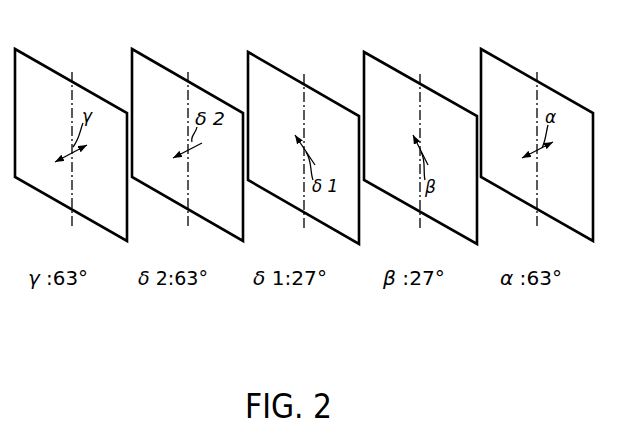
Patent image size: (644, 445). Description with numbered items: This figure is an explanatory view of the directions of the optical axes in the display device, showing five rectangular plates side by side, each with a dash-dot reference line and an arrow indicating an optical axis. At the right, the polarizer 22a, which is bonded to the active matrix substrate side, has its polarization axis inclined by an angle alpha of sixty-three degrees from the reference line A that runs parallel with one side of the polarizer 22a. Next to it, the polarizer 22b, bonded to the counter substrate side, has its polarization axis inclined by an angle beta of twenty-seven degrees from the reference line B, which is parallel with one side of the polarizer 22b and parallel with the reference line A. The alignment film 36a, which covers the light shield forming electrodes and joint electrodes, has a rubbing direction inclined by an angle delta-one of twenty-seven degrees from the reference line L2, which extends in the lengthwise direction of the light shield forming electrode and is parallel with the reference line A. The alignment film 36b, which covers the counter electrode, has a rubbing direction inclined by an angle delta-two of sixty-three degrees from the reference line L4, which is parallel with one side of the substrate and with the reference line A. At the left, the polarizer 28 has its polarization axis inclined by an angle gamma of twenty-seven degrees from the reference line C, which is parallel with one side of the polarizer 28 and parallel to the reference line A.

The polarizer 28 is at (40, 80).
The alignment film 36b is at (156, 78).
The alignment film 36a is at (267, 78).
The polarizer 22b is at (387, 78).
The polarizer 22a is at (508, 78).
The reference line C is at (73, 80).
The reference line L4 is at (188, 82).
The reference line L2 is at (305, 82).
The reference line B is at (421, 82).
The reference line A is at (538, 82).